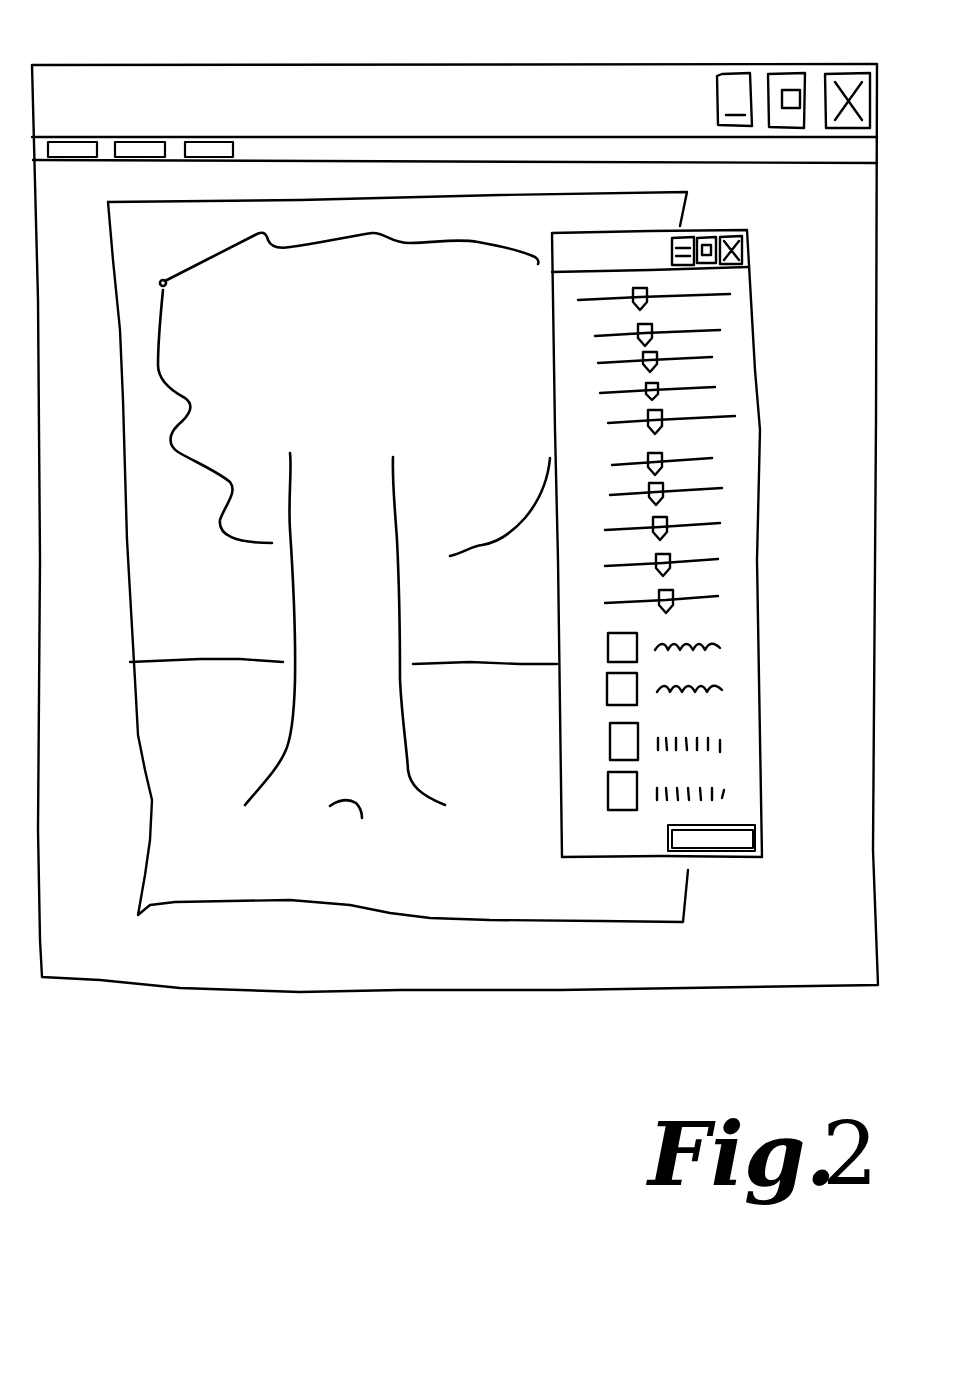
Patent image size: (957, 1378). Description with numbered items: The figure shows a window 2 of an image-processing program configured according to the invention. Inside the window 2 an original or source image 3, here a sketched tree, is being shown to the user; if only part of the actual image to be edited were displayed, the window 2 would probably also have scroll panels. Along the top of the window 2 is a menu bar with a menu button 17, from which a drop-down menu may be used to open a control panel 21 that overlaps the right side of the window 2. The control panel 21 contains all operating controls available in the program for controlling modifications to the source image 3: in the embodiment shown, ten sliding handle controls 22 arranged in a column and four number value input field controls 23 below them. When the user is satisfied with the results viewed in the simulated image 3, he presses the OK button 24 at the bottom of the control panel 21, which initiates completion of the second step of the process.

The menu button 17 is at (140, 140).
The window 2 is at (113, 600).
The source image 3 is at (373, 388).
The control panel 21 is at (755, 365).
The sliding handle controls 22 is at (720, 457).
The number value input field controls 23 is at (720, 712).
The OK button 24 is at (720, 848).